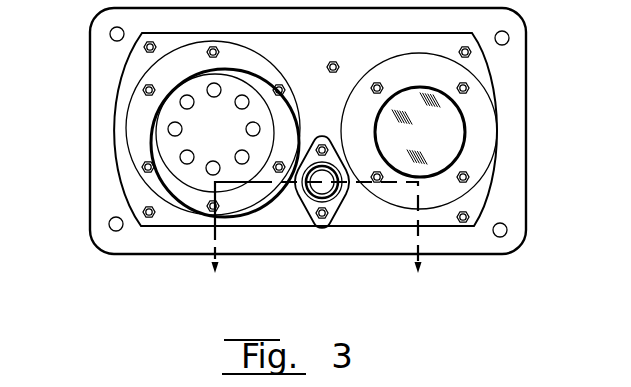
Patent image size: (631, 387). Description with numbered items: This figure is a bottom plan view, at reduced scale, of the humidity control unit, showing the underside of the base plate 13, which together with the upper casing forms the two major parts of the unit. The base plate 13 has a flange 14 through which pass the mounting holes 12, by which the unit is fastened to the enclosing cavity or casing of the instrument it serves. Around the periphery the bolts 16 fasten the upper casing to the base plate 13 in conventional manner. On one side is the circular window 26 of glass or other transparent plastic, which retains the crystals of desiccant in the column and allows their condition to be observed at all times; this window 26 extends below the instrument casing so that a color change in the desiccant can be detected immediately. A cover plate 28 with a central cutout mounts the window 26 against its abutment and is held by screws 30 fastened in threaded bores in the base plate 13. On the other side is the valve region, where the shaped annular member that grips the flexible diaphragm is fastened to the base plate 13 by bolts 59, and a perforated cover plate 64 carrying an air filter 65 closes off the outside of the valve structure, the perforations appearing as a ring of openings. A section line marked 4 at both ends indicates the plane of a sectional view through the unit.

The section line 4- 4 is at (314, 242).
The mounting holes 12 is at (507, 230).
The base plate 13 is at (80, 148).
The flange 14 is at (515, 182).
The bolts 16 is at (151, 44).
The circular window 26 is at (433, 132).
The cover plate 28 is at (425, 70).
The screws 30 is at (375, 84).
The bolts 59 is at (143, 168).
The cover plate 64 is at (141, 107).
The air filter 65 is at (188, 155).